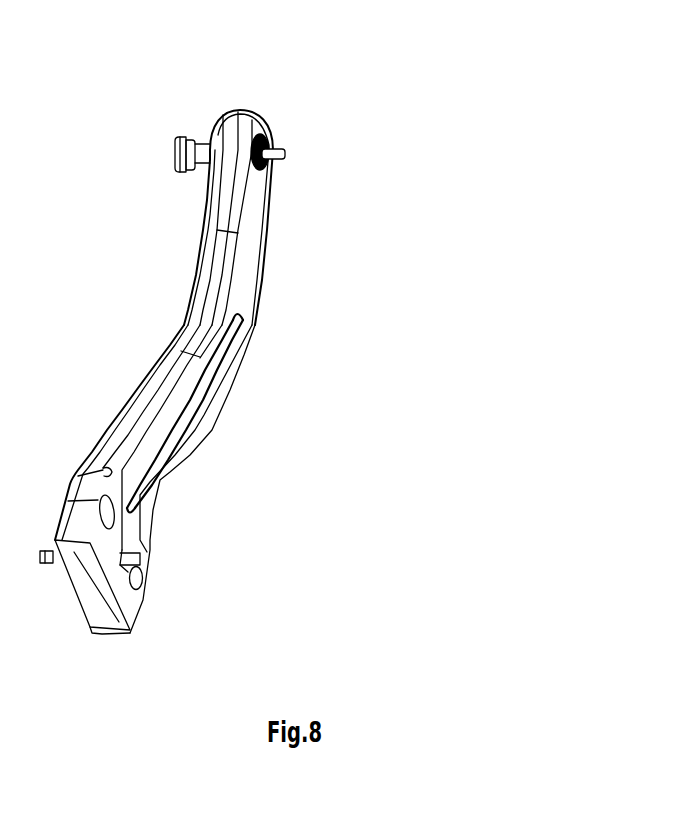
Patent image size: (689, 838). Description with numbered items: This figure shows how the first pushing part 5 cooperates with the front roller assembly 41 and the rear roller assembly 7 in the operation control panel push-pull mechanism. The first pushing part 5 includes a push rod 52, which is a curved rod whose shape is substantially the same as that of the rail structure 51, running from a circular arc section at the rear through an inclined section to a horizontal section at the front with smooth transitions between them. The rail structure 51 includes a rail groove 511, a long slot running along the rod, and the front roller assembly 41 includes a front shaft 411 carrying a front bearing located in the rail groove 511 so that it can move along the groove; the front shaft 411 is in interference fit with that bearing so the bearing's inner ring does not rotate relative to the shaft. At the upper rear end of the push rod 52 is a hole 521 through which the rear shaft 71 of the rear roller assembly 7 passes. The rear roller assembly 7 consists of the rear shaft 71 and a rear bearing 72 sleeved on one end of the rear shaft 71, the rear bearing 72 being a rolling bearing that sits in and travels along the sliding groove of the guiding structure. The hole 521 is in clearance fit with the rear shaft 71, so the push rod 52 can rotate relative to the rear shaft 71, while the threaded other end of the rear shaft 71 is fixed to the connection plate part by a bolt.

The first pushing part 5 is at (265, 371).
The rail structure 51 is at (265, 473).
The rail groove 511 is at (203, 393).
The push rod 52 is at (250, 255).
The hole 521 is at (266, 130).
The rear roller assembly 7 is at (147, 96).
The rear shaft 71 is at (200, 152).
The rear bearing 72 is at (173, 167).
The front roller assembly 41 is at (201, 587).
The front shaft 411 is at (140, 575).